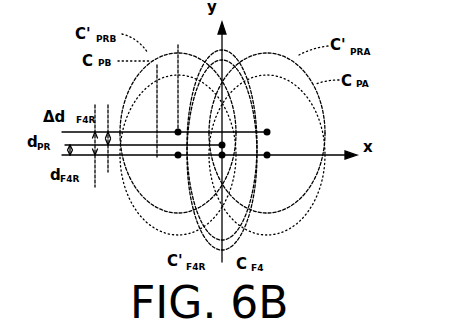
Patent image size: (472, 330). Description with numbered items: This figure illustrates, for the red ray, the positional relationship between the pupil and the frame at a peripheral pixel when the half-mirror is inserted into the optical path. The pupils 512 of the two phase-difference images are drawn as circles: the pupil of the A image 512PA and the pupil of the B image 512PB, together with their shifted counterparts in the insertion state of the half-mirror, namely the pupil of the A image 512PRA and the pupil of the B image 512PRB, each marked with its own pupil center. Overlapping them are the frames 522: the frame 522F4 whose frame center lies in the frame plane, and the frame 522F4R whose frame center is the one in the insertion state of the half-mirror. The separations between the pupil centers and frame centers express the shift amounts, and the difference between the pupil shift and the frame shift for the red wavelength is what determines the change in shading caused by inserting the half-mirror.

The frame 522 is at (222, 66).
The frame for red ray in half-mirror insertion state 522F4R is at (200, 50).
The frame in frame plane SF4 522F4 is at (263, 50).
The pupil 512 is at (219, 165).
The pupil of the B image for red ray 512PRB is at (143, 211).
The pupil of the B image 512PB is at (157, 234).
The pupil of the A image for red ray 512PRA is at (300, 210).
The pupil of the A image 512PA is at (304, 232).